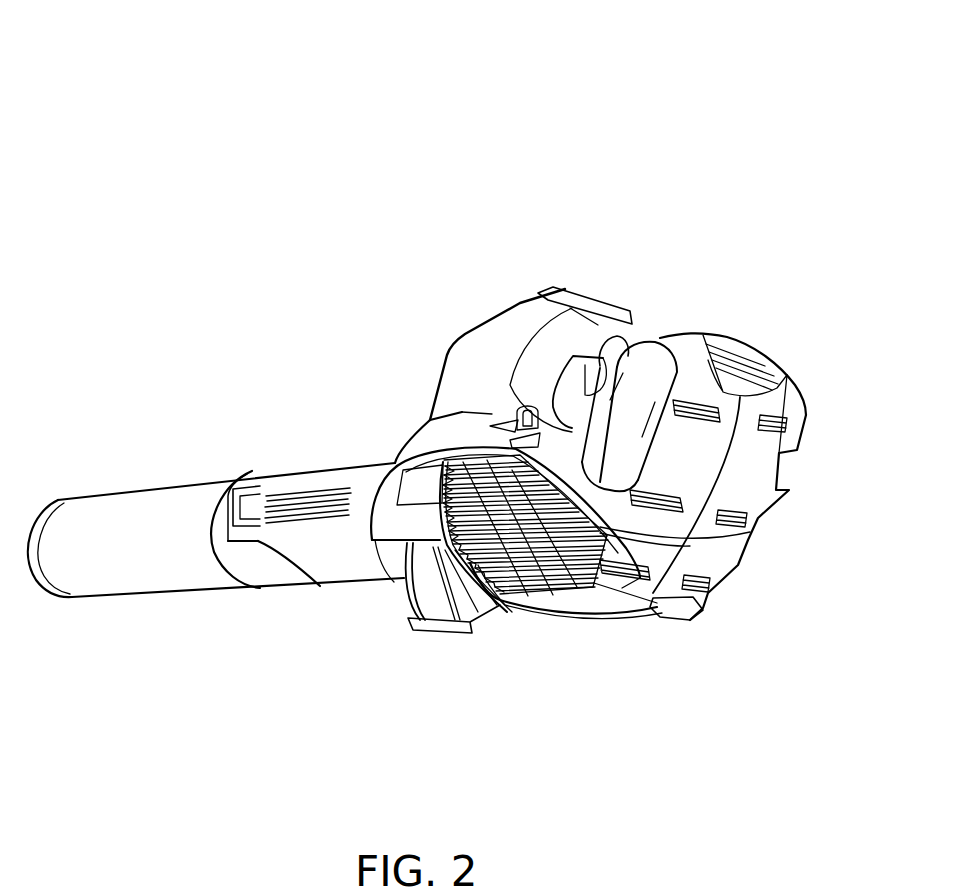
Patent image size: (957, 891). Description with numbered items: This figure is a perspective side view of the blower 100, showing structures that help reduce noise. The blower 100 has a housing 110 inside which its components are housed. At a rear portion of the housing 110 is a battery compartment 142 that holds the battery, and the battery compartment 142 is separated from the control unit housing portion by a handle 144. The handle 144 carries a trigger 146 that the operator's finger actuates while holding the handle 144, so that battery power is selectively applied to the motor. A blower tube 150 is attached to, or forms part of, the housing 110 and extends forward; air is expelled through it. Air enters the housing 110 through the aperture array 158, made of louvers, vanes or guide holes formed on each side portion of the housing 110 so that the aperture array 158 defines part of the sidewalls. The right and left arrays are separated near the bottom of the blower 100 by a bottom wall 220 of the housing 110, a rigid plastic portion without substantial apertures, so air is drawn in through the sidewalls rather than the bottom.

The blower 100 is at (150, 108).
The housing 110 is at (458, 390).
The battery compartment 142 is at (682, 360).
The handle 144 is at (611, 331).
The trigger 146 is at (588, 352).
The blower tube 150 is at (148, 490).
The aperture array 158 is at (558, 586).
The bottom wall 220 is at (549, 608).